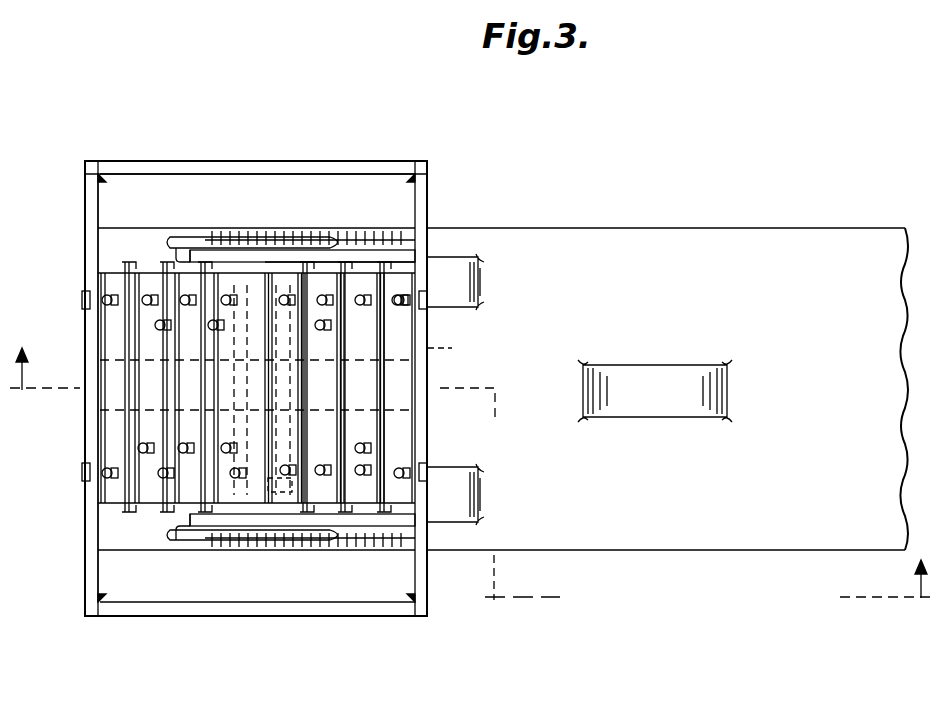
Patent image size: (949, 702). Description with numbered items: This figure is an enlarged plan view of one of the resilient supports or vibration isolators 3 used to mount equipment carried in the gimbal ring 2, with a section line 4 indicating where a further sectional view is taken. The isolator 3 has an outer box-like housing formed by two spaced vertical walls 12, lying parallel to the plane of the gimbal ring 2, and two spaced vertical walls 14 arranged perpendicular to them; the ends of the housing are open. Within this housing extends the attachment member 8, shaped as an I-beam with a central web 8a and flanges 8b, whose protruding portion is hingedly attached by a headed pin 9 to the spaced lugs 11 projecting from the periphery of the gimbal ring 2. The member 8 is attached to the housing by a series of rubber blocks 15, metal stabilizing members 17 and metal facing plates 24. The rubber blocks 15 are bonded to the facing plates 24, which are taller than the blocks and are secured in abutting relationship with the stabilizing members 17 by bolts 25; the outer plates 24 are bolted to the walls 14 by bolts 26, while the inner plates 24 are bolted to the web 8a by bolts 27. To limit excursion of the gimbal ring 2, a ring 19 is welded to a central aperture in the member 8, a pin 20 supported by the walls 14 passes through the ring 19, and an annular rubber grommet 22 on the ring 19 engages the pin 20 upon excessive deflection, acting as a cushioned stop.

The gimbal ring 2 is at (558, 231).
The isolator 3 is at (372, 152).
The section line 4- 4 is at (469, 488).
The attachment member 8 is at (160, 537).
The central web 8a is at (312, 204).
The flanges 8b is at (328, 576).
The headed pin 9 is at (252, 230).
The lugs 11 is at (450, 274).
The vertical walls 12 is at (172, 168).
The vertical walls 14 is at (85, 196).
The rubber blocks 15 is at (148, 260).
The stabilizing members 17 is at (190, 390).
The ring 19 is at (278, 316).
The pin 20 is at (458, 348).
The annular rubber grommet 22 is at (300, 489).
The facing plates 24 is at (428, 270).
The bolts 25 is at (160, 316).
The bolts 26 is at (94, 306).
The bolts 27 is at (270, 298).